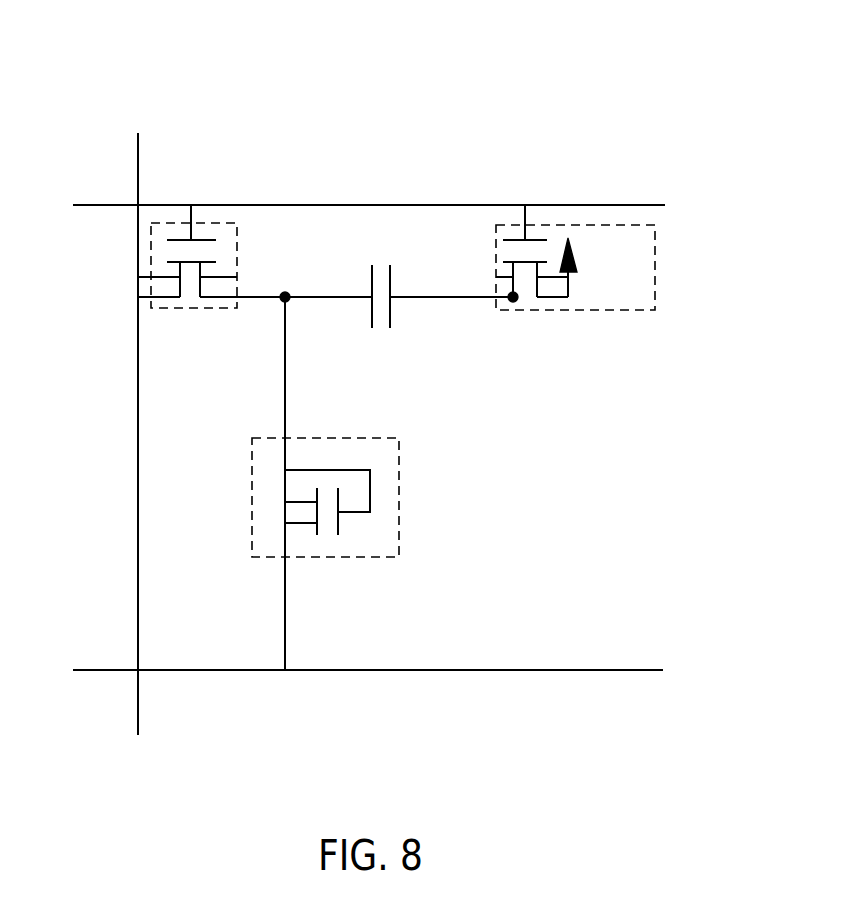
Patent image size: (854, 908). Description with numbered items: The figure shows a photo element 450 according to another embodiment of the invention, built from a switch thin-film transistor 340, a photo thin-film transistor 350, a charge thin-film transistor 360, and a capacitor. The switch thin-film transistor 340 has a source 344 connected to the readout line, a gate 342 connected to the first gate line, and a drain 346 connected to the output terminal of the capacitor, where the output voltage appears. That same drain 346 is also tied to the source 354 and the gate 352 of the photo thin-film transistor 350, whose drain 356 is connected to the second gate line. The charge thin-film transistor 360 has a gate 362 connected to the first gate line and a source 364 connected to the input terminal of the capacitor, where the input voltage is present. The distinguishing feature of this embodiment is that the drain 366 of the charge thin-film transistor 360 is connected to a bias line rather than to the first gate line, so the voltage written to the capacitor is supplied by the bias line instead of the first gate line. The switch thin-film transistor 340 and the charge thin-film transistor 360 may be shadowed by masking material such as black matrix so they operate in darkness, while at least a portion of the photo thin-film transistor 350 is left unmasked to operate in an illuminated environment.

The photo element 450 is at (294, 88).
The switch thin-film transistor 340 is at (150, 240).
The gate 342 is at (192, 232).
The source 344 is at (140, 277).
The drain 346 is at (237, 277).
The photo thin-film transistor 350 is at (399, 542).
The gate 352 is at (352, 515).
The source 354 is at (307, 497).
The drain 356 is at (307, 528).
The charge thin-film transistor 360 is at (557, 224).
The gate 362 is at (525, 238).
The source 364 is at (513, 275).
The drain 366 is at (537, 275).